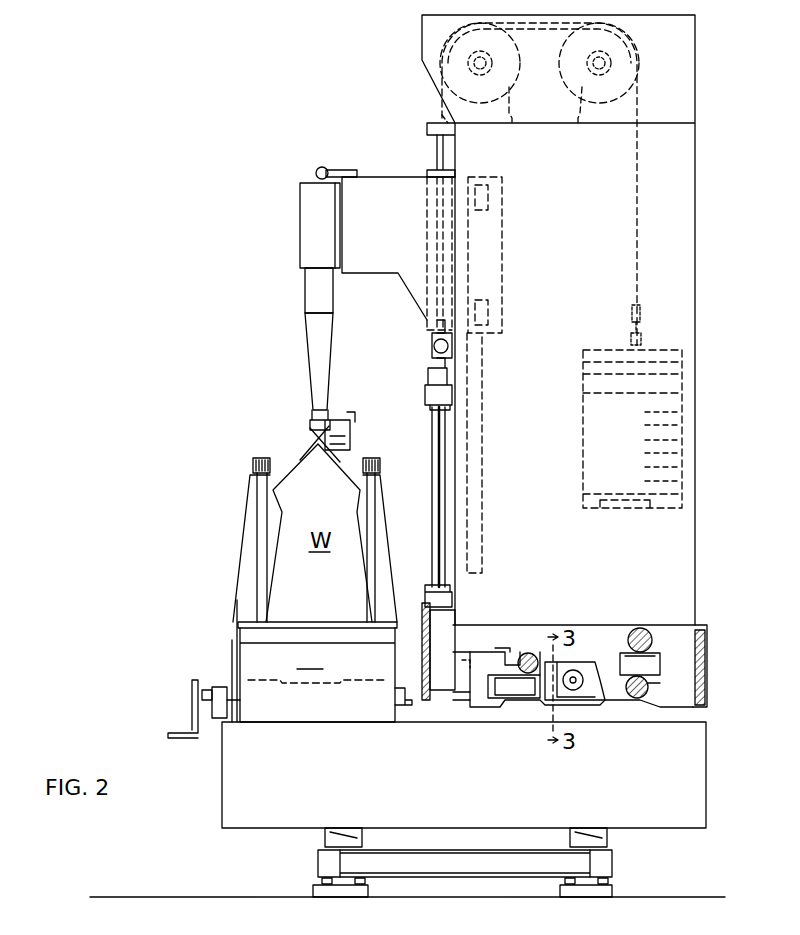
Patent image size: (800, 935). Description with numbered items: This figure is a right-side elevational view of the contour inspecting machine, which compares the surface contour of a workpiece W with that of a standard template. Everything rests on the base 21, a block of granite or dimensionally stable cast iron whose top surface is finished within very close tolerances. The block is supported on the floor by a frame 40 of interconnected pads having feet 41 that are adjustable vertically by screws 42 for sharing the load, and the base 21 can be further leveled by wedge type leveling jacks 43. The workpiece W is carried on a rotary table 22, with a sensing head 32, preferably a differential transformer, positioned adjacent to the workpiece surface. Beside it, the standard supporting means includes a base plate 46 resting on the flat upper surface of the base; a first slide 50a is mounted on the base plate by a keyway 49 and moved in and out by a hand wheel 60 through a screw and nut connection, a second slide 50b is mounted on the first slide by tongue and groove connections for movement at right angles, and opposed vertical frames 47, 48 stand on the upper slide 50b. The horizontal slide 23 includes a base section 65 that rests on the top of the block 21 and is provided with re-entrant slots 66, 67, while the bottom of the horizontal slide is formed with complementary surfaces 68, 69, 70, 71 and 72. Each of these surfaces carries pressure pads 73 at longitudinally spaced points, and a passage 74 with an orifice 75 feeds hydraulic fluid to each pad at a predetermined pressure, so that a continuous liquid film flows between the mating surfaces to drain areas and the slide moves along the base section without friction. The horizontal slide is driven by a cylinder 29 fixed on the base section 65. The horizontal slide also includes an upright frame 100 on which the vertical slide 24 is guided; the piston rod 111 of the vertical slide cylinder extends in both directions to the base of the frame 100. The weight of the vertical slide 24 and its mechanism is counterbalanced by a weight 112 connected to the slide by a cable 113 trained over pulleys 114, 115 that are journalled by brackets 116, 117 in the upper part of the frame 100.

The base 21 is at (709, 760).
The rotary table 22 is at (325, 672).
The horizontal slide 23 is at (705, 590).
The vertical slide 24 is at (388, 185).
The cylinder 29 is at (577, 662).
The sensing head 32 is at (318, 432).
The frame 40 is at (612, 864).
The feet 41 is at (605, 893).
The screws 42 is at (610, 882).
The wedge type leveling jacks 43 is at (610, 838).
The base plate 46 is at (228, 722).
The vertical frame 47 is at (250, 522).
The vertical frame 48 is at (382, 522).
The keyway 49 is at (212, 705).
The first slide 50a is at (232, 680).
The second slide 50b is at (235, 632).
The hand wheel 60 is at (193, 715).
The base section 65 is at (707, 705).
The re-entrant slot 66 is at (707, 665).
The re-entrant slot 67 is at (492, 696).
The complementary surface 68 is at (500, 650).
The complementary surface 69 is at (640, 628).
The complementary surface 70 is at (530, 649).
The complementary surface 71 is at (518, 700).
The complementary surface 72 is at (630, 700).
The pressure pads 73 is at (567, 667).
The passage 74 is at (645, 698).
The orifice 75 is at (670, 682).
The upright frame 100 is at (682, 525).
The piston rod 111 is at (438, 441).
The weight 112 is at (648, 355).
The cable 113 is at (637, 226).
The pulley 114 is at (445, 45).
The pulley 115 is at (625, 40).
The bracket 116 is at (510, 123).
The bracket 117 is at (578, 123).